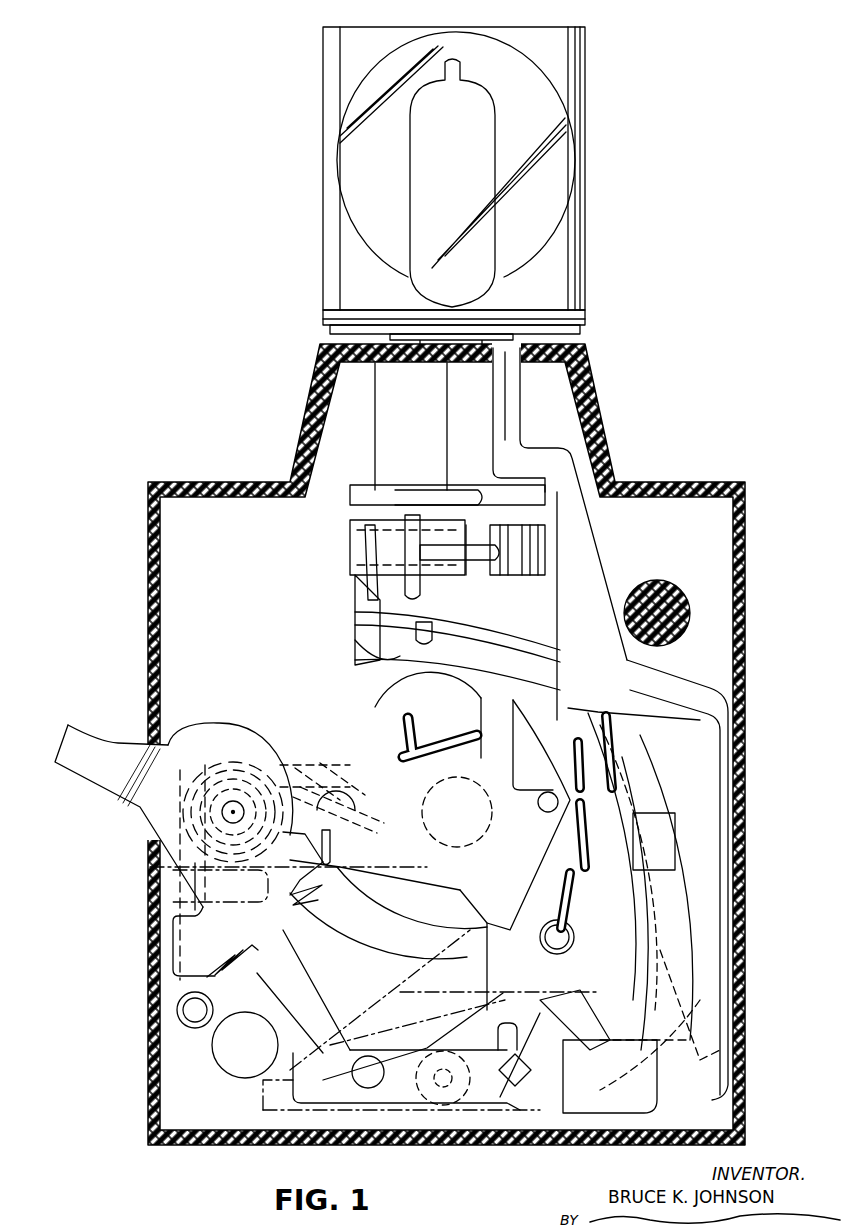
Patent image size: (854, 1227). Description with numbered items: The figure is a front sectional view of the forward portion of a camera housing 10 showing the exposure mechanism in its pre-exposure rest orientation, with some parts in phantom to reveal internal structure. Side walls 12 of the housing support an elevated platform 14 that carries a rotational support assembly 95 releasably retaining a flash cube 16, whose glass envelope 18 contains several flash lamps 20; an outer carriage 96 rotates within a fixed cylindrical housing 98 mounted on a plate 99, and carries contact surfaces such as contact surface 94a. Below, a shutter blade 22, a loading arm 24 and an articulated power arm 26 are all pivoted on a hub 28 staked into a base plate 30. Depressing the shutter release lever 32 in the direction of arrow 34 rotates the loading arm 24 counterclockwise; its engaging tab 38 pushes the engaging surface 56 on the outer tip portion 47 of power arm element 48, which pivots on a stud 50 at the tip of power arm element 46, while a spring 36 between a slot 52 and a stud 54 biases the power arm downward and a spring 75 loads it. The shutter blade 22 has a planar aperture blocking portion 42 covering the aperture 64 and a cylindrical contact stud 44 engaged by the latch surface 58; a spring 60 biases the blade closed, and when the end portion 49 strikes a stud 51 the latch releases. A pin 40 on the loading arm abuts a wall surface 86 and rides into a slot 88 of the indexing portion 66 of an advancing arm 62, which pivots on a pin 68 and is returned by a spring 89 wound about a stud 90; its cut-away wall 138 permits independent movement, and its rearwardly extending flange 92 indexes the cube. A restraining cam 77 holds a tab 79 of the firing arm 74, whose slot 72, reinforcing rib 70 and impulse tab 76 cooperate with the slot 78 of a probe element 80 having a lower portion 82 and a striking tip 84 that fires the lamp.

The housing 10 is at (668, 396).
The side walls 12 is at (130, 648).
The elevated platform 14 is at (635, 368).
The flash cube 16 is at (622, 72).
The glass envelope 18 is at (500, 60).
The flash lamps 20 is at (478, 160).
The shutter blade 22 is at (375, 718).
The loading arm 24 is at (348, 692).
The articulated power arm 26 is at (236, 932).
The hub 28 is at (232, 800).
The base plate 30 is at (178, 512).
The shutter release lever 32 is at (72, 742).
The arrow 34 is at (50, 792).
The spring 36 is at (190, 972).
The engaging tab 38 is at (497, 1090).
The pin 40 is at (380, 640).
The planar aperture blocking portion 42 is at (470, 824).
The cylindrical contact stud 44 is at (555, 794).
The power arm element 46 is at (258, 1015).
The outer tip portion 47 is at (518, 984).
The power arm element 48 is at (397, 1080).
The end portion 49 is at (283, 998).
The stud 50 is at (368, 1058).
The stud 51 is at (238, 1062).
The slot 52 is at (345, 858).
The stud 54 is at (178, 1012).
The engaging surface 56 is at (530, 1080).
The shutter engaging latch surface 58 is at (498, 1036).
The spring 60 is at (350, 792).
The advancing arm 62 is at (655, 672).
The aperture 64 is at (455, 778).
The indexing portion 66 is at (325, 556).
The pin 68 is at (443, 1068).
The reinforcing rib 70 is at (628, 820).
The slot 72 is at (597, 747).
The firing arm 74 is at (640, 782).
The spring 75 is at (173, 892).
The impulse tab 76 is at (655, 1040).
The restraining cam 77 is at (700, 922).
The slot 78 is at (667, 880).
The tab 79 is at (720, 960).
The probe element 80 is at (565, 566).
The lower portion 82 is at (630, 1090).
The striking tip 84 is at (510, 355).
The wall surface 86 is at (355, 648).
The slot 88 is at (400, 610).
The spring 89 is at (705, 838).
The stud 90 is at (553, 937).
The rearwardly extending flange 92 is at (472, 550).
The contact surface 94a is at (540, 548).
The rotational support assembly 95 is at (660, 438).
The outer carriage 96 is at (470, 520).
The cylindrical housing 98 is at (388, 388).
The plate 99 is at (335, 343).
The cut-away wall 138 is at (434, 630).